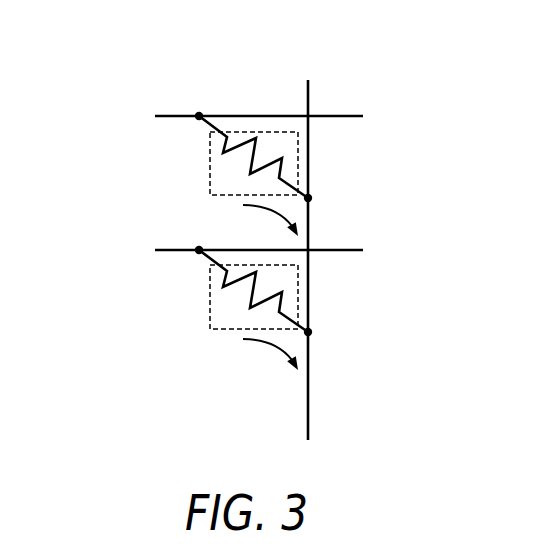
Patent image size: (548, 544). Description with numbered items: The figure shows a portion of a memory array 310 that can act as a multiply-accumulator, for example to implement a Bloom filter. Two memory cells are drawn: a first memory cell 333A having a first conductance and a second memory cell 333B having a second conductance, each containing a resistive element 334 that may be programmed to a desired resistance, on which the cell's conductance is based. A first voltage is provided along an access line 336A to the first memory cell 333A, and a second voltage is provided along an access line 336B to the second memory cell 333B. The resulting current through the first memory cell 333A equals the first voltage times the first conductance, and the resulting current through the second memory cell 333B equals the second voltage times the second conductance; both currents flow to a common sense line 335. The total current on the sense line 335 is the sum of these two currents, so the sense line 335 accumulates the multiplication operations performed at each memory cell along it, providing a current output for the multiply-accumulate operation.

The memory array 310 is at (146, 30).
The memory cell 333A is at (277, 128).
The memory cell 333B is at (210, 308).
The resistive element 334 is at (240, 132).
The sense line 335 is at (309, 94).
The access line 336A is at (339, 116).
The access line 336B is at (339, 250).